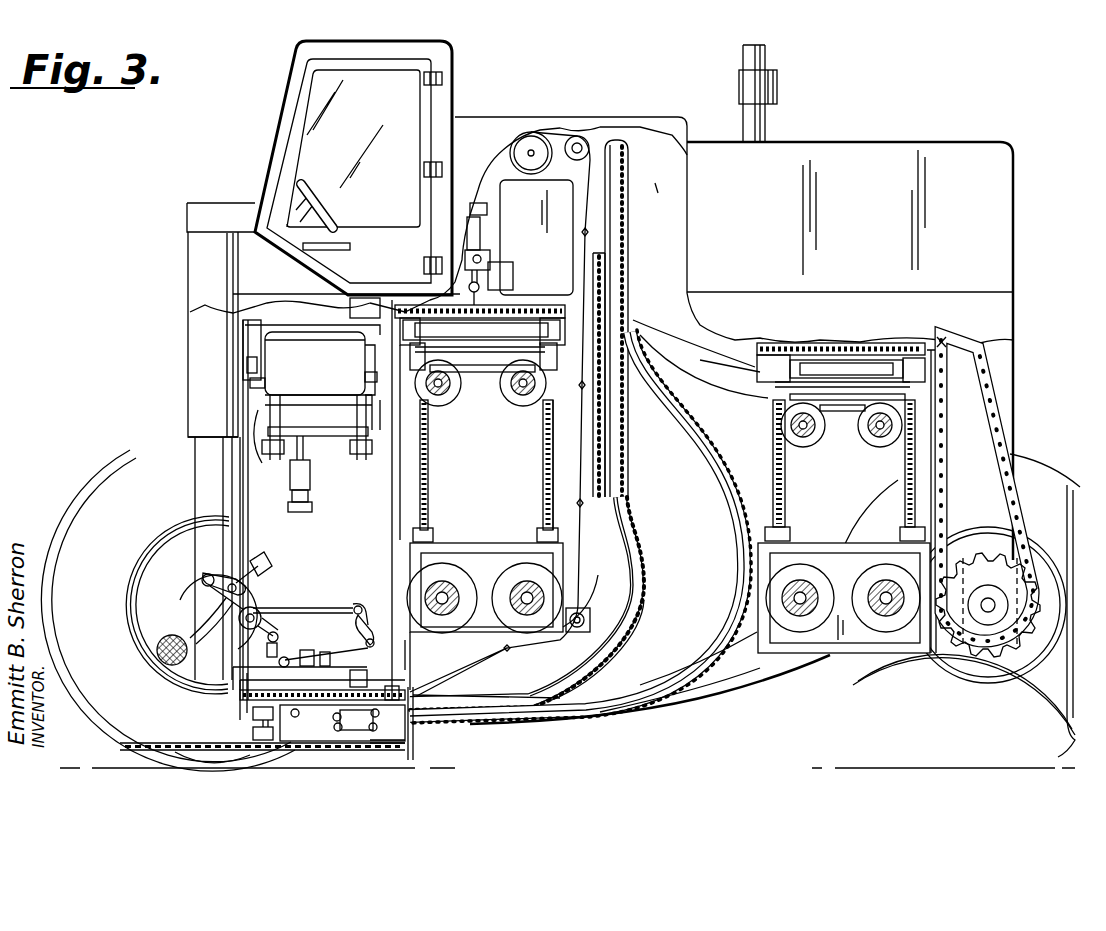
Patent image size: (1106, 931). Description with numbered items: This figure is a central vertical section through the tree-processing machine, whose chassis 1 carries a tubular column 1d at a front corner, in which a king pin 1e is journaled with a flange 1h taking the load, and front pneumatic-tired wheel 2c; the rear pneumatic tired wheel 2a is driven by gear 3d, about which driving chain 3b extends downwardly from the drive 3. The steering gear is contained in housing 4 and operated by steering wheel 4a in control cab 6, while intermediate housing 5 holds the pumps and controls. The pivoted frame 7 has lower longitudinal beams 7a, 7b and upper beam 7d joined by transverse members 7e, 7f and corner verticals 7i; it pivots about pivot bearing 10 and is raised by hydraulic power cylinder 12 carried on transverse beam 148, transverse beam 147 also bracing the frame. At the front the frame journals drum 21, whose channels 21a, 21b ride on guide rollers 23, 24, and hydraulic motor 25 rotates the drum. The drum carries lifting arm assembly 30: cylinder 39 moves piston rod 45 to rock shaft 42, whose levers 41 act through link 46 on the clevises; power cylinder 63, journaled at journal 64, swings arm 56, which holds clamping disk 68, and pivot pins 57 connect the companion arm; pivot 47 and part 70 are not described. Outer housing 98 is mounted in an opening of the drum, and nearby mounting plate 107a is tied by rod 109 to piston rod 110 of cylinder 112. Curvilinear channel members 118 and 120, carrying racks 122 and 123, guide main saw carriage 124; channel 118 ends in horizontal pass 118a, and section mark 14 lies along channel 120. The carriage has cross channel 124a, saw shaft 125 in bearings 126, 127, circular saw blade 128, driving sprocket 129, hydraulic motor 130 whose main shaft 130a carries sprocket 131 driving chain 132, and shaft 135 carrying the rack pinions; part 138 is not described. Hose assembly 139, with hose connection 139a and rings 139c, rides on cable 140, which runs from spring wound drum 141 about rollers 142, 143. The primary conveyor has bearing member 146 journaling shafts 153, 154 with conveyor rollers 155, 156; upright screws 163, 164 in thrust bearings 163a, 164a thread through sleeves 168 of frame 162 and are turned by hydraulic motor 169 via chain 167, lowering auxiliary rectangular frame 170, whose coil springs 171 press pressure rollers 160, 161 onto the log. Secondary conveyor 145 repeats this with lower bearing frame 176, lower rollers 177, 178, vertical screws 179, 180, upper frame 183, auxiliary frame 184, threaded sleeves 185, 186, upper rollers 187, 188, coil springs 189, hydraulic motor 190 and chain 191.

The machine body 1 is at (956, 130).
The rear wheel 2a is at (902, 717).
The front wheel 2c is at (110, 493).
The fender 3 is at (1003, 210).
The drive chain 3b is at (1000, 415).
The sprocket 3d is at (1002, 652).
The cab mount 4 is at (197, 222).
The steering handle 4a is at (327, 226).
The compartment 5 is at (652, 122).
The cab window 6 is at (278, 130).
The main frame 7 is at (724, 713).
The frame portion 7a is at (781, 651).
The frame bottom member 7b is at (676, 705).
The frame curved member 7d is at (748, 392).
The chain guide 7e is at (948, 340).
The frame bracket 7f is at (245, 341).
The frame post 7i is at (932, 453).
The drive housing 10 is at (928, 662).
The hydraulic cylinder 12 is at (483, 231).
The section line 14 is at (484, 746).
The post 1d is at (198, 310).
The lower post 1e is at (200, 501).
The post bracket 1h is at (197, 435).
The carriage frame 21 is at (393, 500).
The frame lug 21a is at (258, 381).
The frame lug 21b is at (368, 377).
The control box 23 is at (260, 364).
The control box side 24 is at (368, 353).
The control panel 25 is at (352, 313).
The lever assembly 30 is at (291, 572).
The cylinder 39 is at (312, 660).
The link 41 is at (326, 619).
The link 42 is at (326, 636).
The rod 45 is at (326, 661).
The bar 46 is at (310, 617).
The pivot 47 is at (232, 627).
The lever arm 56 is at (182, 618).
The lever 57 is at (200, 586).
The link block 63 is at (265, 566).
The link 64 is at (243, 587).
The knob 68 is at (163, 668).
The support 70 is at (370, 427).
The floor 98 is at (305, 340).
The rod 107a is at (270, 415).
The cross bar 109 is at (327, 427).
The rod 110 is at (303, 452).
The cylinder 112 is at (312, 491).
The conveyor chain 118 is at (646, 547).
The chain portion 118a is at (466, 664).
The conveyor trough 120 is at (722, 489).
The chain return run 122 is at (645, 611).
The trough wall 123 is at (742, 521).
The runner plate 124 is at (328, 742).
The runner plate portion 124a is at (348, 744).
The runner 125 is at (267, 740).
The block 126 is at (255, 716).
The block 127 is at (258, 737).
The sled plate 128 is at (160, 751).
The rack plate 129 is at (240, 698).
The end member 130 is at (372, 746).
The box 130a is at (356, 720).
The block 131 is at (365, 685).
The housing 132 is at (305, 736).
The block 135 is at (398, 697).
The bolts 138 is at (296, 712).
The elevator chain 139 is at (615, 447).
The chain end 139a is at (412, 726).
The chain guide 139c is at (548, 502).
The cable 140 is at (560, 133).
The pulley 141 is at (527, 132).
The pulley 142 is at (588, 138).
The cable 143 is at (565, 627).
The carriage assembly 145 is at (777, 439).
The roller housing 146 is at (478, 548).
The bracket 147 is at (405, 656).
The pulley bracket 148 is at (505, 277).
The roller shaft 153 is at (437, 597).
The housing wall 154 is at (522, 560).
The roller 155 is at (433, 598).
The roller 156 is at (527, 597).
The wheel 160 is at (440, 401).
The wheel 161 is at (520, 401).
The beam 162 is at (482, 344).
The post 163 is at (428, 463).
The post foot 163a is at (436, 536).
The post 164 is at (543, 475).
The post foot 164a is at (540, 531).
The top beam 167 is at (524, 315).
The block 168 is at (558, 368).
The rack 169 is at (418, 308).
The axle bar 170 is at (468, 374).
The rail 171 is at (470, 353).
The roller housing 176 is at (812, 547).
The roller 177 is at (801, 650).
The roller 178 is at (888, 650).
The post 179 is at (780, 461).
The post 180 is at (905, 502).
The bar 183 is at (812, 378).
The axle bar 184 is at (838, 412).
The frame member 185 is at (708, 370).
The beam 186 is at (905, 378).
The wheel 187 is at (806, 442).
The wheel 188 is at (874, 437).
The rail 189 is at (875, 399).
The rack 190 is at (756, 345).
The block 191 is at (876, 342).